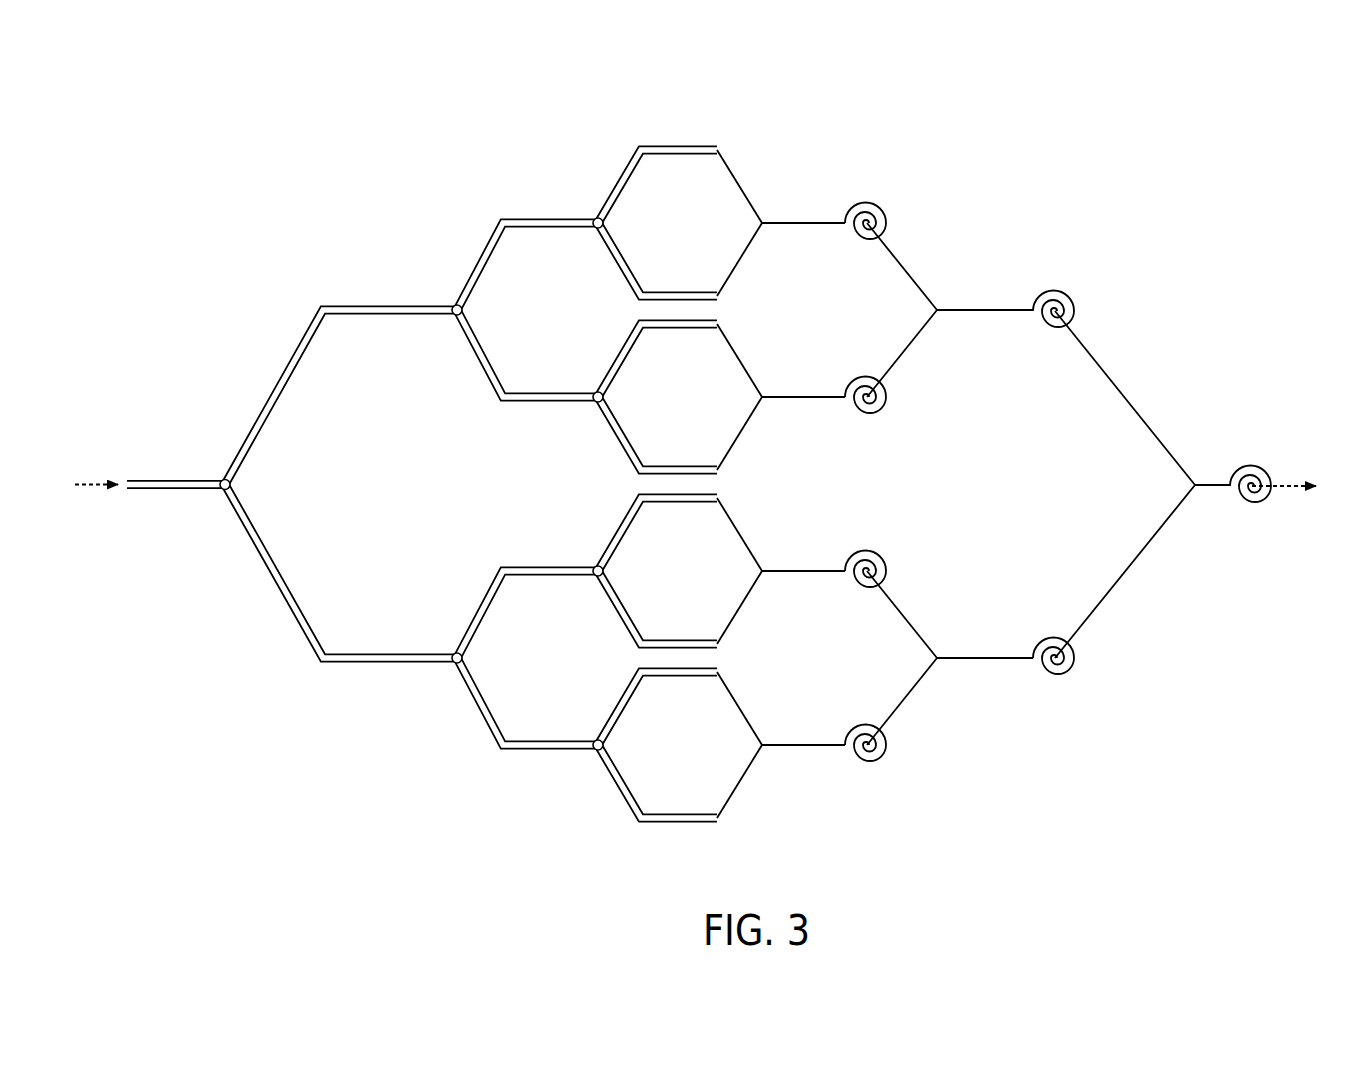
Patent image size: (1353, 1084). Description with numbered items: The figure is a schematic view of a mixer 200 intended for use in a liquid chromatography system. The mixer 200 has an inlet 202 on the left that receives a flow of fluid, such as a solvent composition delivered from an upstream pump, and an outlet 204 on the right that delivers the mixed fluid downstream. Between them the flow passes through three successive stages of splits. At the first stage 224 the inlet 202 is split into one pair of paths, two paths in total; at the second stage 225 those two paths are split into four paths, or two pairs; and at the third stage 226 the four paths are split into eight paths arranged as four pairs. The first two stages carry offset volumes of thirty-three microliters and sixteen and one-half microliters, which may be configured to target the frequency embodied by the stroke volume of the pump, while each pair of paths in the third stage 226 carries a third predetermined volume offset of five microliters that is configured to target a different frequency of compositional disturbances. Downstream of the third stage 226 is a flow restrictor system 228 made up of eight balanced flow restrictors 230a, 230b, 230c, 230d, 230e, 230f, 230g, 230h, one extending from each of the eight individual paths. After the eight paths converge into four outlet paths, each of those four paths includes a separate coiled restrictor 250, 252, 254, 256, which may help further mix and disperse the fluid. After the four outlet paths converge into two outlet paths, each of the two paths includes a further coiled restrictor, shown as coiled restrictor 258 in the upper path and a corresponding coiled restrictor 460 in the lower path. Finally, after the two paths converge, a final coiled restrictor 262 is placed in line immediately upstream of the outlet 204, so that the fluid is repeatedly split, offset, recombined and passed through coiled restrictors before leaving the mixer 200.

The mixer 200 is at (701, 474).
The inlet 202 is at (170, 478).
The outlet 204 is at (1290, 490).
The first stage 224 is at (450, 832).
The second stage 225 is at (595, 832).
The third stage 226 is at (722, 832).
The flow restrictor system 228 is at (717, 434).
The balanced flow restrictor 230a is at (744, 193).
The balanced flow restrictor 230b is at (745, 261).
The balanced flow restrictor 230c is at (744, 367).
The balanced flow restrictor 230d is at (745, 435).
The balanced flow restrictor 230e is at (744, 541).
The balanced flow restrictor 230f is at (745, 609).
The balanced flow restrictor 230g is at (744, 715).
The balanced flow restrictor 230h is at (745, 783).
The coiled restrictor 250 is at (892, 223).
The coiled restrictor 252 is at (892, 397).
The coiled restrictor 254 is at (892, 571).
The coiled restrictor 256 is at (892, 745).
The coiled restrictor 258 is at (1053, 288).
The mixer 460 is at (1053, 678).
The final coiled restrictor 262 is at (1249, 462).